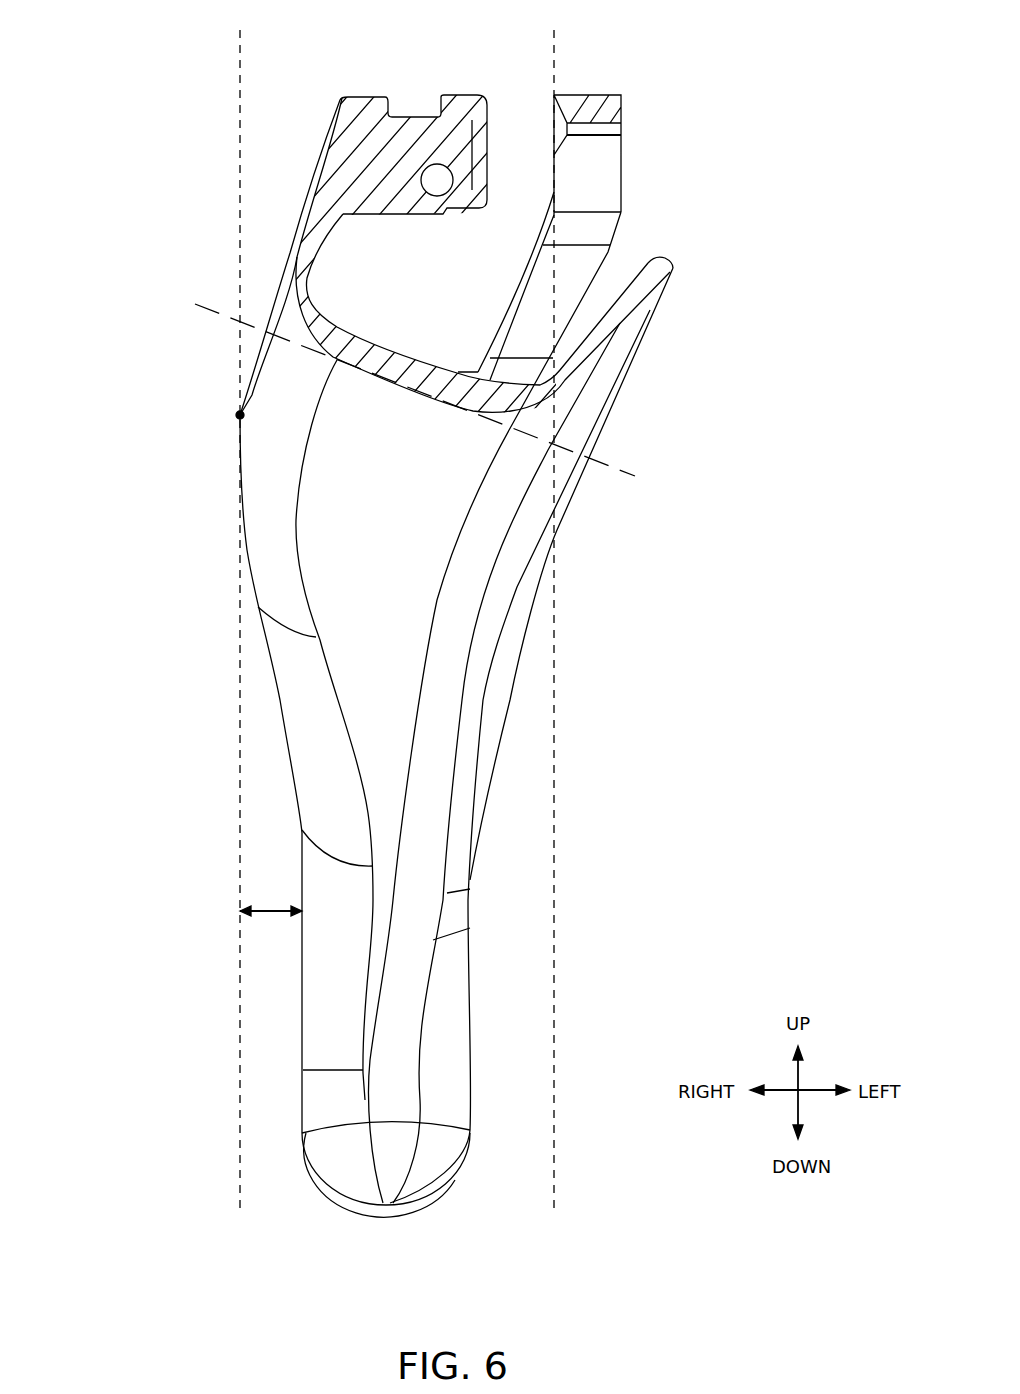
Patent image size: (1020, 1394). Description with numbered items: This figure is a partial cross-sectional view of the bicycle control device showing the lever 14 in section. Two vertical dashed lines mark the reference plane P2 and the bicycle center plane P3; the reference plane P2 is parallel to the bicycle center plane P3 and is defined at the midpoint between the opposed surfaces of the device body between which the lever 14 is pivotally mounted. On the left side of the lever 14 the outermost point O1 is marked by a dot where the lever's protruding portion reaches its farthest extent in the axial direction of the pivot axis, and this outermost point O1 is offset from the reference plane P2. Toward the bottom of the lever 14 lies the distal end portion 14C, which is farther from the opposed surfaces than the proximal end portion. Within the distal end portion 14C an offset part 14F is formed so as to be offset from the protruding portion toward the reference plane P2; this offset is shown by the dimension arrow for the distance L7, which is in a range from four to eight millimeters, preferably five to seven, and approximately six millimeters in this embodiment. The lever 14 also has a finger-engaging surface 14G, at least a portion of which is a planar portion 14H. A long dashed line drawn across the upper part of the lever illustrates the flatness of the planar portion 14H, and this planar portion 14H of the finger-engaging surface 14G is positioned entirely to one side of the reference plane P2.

The lever 14 is at (657, 302).
The distal end portion 14C is at (198, 1057).
The offset part 14F is at (302, 962).
The finger-engaging surface 14G is at (352, 493).
The planar portion 14H is at (397, 383).
The outermost point O1 is at (237, 413).
The distance L7 is at (270, 910).
The reference plane P2 is at (555, 608).
The bicycle center plane P3 is at (241, 608).